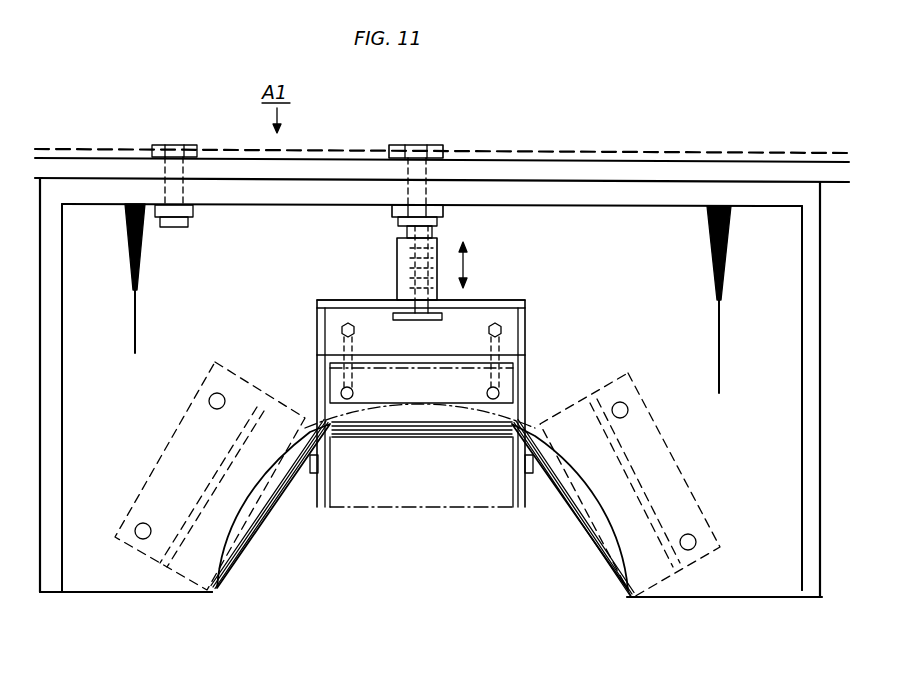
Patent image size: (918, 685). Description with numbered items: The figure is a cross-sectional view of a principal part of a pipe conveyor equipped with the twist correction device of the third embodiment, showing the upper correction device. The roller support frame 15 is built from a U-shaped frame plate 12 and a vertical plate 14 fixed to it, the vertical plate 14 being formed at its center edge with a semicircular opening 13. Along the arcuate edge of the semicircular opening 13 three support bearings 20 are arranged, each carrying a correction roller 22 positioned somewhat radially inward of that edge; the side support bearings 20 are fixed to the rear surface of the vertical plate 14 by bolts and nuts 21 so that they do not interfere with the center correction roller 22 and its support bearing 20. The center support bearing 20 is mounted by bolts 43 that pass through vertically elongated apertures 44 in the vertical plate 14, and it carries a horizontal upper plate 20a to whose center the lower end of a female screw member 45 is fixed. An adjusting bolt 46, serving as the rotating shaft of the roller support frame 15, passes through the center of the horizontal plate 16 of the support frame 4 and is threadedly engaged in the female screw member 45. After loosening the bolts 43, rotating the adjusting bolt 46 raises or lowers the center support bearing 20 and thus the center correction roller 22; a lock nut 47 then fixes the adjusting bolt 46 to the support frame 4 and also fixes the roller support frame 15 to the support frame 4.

The support frame 4 is at (233, 182).
The U-shaped frame plate 12 is at (798, 540).
The semicircular opening 13 is at (608, 598).
The vertical plate 14 is at (127, 583).
The roller support frame 15 is at (78, 593).
The horizontal plate 16 is at (110, 180).
The support bearing 20 is at (378, 316).
The horizontal upper plate 20a is at (505, 300).
The bolts and nuts 21 is at (210, 397).
The correction roller 22 is at (253, 547).
The bolt 43 is at (348, 325).
The vertically elongated aperture 44 is at (340, 347).
The female screw member 45 is at (397, 255).
The adjusting bolt 46 is at (441, 147).
The lock nut 47 is at (443, 215).